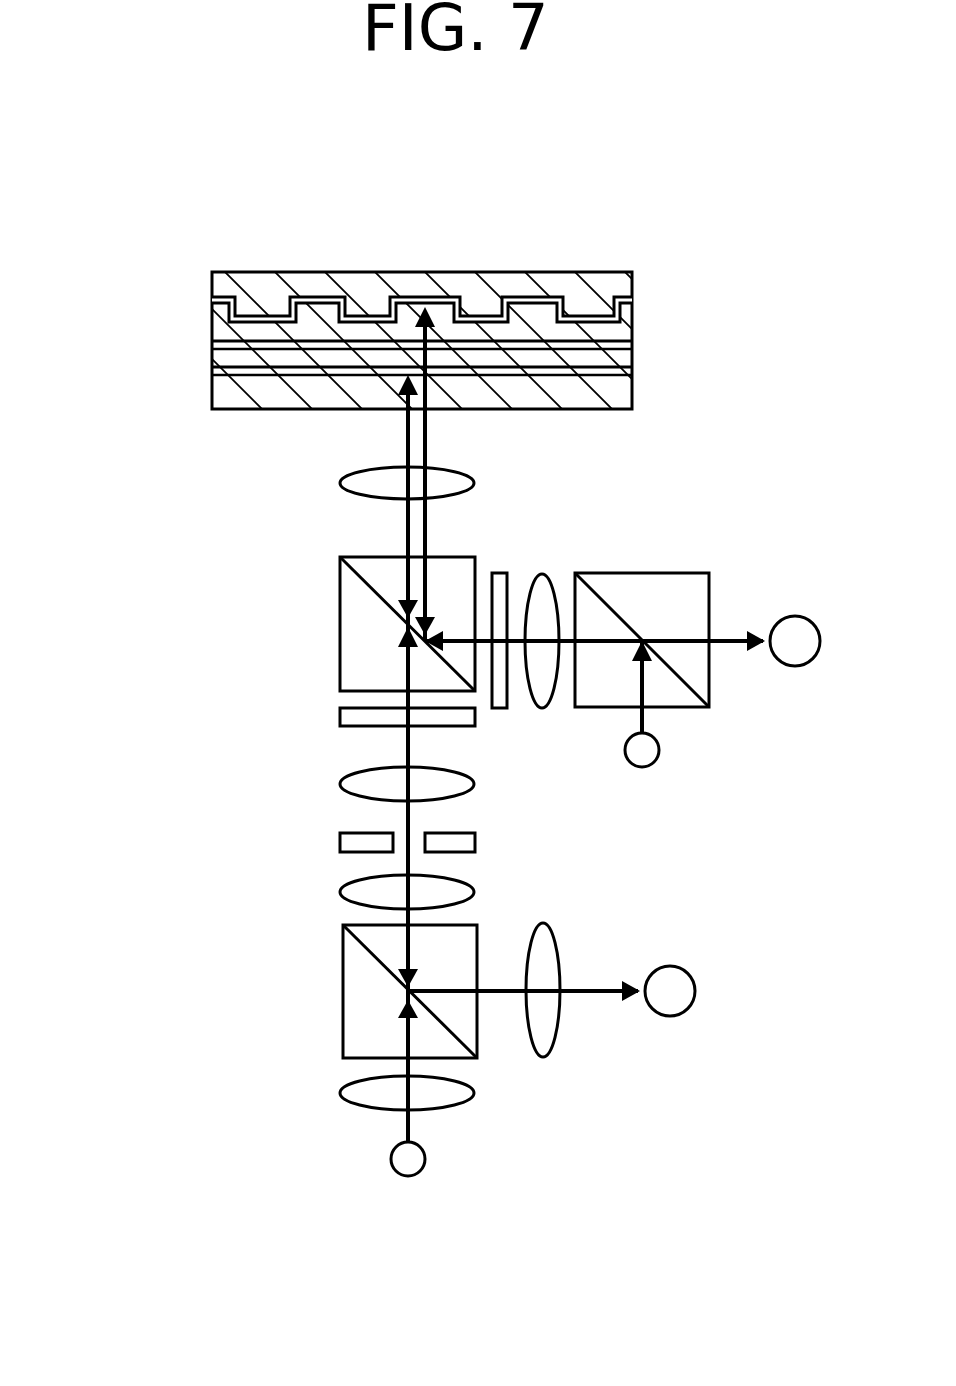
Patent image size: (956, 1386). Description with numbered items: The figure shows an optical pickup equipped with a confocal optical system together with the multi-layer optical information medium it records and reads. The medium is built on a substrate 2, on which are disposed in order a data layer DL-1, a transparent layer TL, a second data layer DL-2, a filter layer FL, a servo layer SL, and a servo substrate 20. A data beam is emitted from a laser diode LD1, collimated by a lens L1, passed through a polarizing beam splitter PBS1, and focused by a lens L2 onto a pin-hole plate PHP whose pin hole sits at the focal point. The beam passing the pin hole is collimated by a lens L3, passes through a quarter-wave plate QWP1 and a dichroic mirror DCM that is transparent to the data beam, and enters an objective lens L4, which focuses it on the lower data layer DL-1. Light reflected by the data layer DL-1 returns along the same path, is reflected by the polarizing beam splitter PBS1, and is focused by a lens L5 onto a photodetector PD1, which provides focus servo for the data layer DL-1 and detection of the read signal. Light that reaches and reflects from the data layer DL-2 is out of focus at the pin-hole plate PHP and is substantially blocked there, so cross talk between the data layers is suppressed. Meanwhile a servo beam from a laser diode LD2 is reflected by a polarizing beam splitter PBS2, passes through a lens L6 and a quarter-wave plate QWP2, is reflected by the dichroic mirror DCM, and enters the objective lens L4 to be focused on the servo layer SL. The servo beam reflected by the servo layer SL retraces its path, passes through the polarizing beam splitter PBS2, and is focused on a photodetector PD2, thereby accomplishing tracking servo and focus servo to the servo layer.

The servo substrate 20 is at (634, 277).
The filter layer FL is at (634, 325).
The servo layer SL is at (211, 304).
The data layer DL-2 is at (211, 348).
The transparent layer TL is at (634, 353).
The data layer DL-1 is at (211, 373).
The substrate 2 is at (634, 383).
The objective lens L4 is at (340, 483).
The dichroic mirror DCM is at (340, 633).
The quarter-wave plate QWP2 is at (500, 572).
The lens L6 is at (542, 709).
The polarizing beam splitter PBS2 is at (642, 572).
The photodetector PD2 is at (795, 667).
The laser diode LD2 is at (642, 768).
The quarter-wave plate QWP1 is at (340, 717).
The lens L3 is at (340, 784).
The pin-hole plate PHP is at (340, 843).
The lens L2 is at (340, 893).
The polarizing beam splitter PBS1 is at (343, 991).
The lens L5 is at (543, 1058).
The photodetector PD1 is at (670, 1017).
The lens L1 is at (340, 1093).
The laser diode LD1 is at (408, 1177).